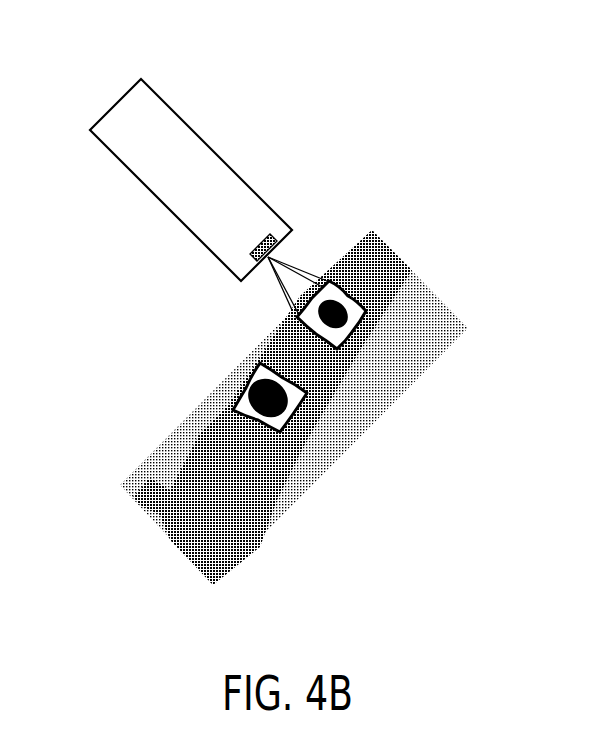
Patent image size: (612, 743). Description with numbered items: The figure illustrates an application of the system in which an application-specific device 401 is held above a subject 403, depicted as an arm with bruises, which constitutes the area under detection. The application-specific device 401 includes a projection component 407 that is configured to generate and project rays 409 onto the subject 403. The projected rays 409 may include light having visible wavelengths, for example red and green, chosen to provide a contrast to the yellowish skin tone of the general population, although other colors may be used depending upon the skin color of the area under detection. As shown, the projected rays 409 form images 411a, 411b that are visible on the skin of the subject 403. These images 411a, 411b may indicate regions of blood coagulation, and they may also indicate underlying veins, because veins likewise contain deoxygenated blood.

The application-specific device 401 is at (261, 122).
The subject 403 is at (305, 406).
The projection component 407 is at (283, 231).
The projected rays 409 is at (315, 255).
The image 411a is at (350, 343).
The image 411b is at (300, 428).